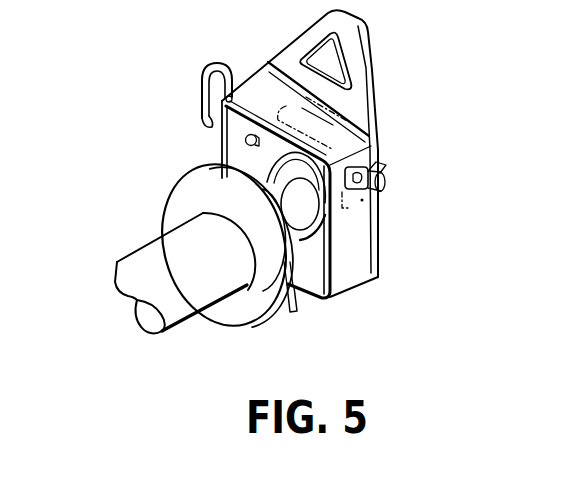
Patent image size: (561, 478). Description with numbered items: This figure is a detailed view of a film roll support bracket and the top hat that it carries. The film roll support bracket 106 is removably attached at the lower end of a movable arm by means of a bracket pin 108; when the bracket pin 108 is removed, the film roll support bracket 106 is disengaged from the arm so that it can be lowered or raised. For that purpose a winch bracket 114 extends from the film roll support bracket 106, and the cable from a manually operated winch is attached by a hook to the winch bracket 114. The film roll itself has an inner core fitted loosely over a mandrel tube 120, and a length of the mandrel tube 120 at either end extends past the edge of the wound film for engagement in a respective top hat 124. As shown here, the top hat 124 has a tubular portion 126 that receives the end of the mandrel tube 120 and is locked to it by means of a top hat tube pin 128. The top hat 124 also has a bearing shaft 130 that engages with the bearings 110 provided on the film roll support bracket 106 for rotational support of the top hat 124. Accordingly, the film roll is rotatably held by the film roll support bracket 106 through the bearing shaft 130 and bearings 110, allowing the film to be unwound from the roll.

The film roll support bracket 106 is at (352, 252).
The bracket pin 108 is at (358, 170).
The bearings 110 is at (275, 161).
The winch bracket 114 is at (363, 58).
The mandrel tube 120 is at (147, 242).
The film roll end cap (top hat) 124 is at (313, 300).
The tubular portion 126 is at (242, 325).
The top hat tube pin 128 is at (290, 318).
The bearing shaft 130 is at (305, 218).